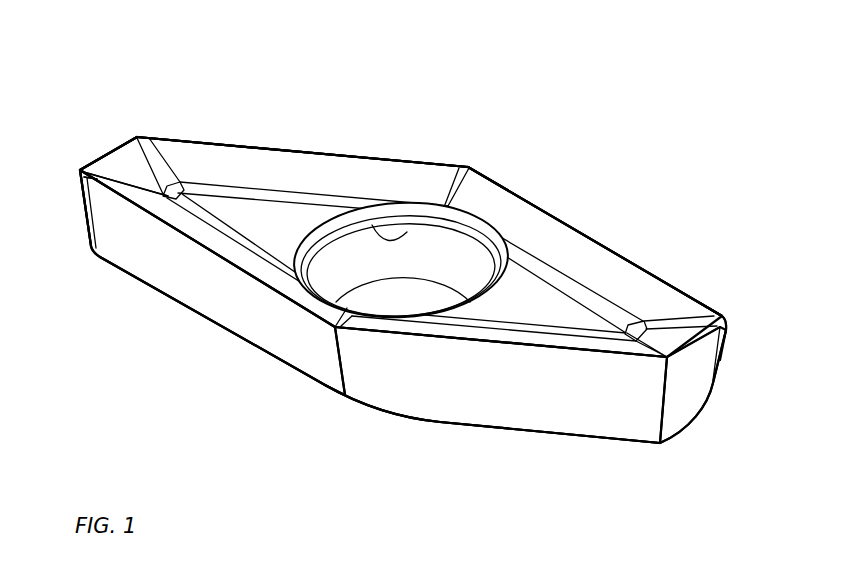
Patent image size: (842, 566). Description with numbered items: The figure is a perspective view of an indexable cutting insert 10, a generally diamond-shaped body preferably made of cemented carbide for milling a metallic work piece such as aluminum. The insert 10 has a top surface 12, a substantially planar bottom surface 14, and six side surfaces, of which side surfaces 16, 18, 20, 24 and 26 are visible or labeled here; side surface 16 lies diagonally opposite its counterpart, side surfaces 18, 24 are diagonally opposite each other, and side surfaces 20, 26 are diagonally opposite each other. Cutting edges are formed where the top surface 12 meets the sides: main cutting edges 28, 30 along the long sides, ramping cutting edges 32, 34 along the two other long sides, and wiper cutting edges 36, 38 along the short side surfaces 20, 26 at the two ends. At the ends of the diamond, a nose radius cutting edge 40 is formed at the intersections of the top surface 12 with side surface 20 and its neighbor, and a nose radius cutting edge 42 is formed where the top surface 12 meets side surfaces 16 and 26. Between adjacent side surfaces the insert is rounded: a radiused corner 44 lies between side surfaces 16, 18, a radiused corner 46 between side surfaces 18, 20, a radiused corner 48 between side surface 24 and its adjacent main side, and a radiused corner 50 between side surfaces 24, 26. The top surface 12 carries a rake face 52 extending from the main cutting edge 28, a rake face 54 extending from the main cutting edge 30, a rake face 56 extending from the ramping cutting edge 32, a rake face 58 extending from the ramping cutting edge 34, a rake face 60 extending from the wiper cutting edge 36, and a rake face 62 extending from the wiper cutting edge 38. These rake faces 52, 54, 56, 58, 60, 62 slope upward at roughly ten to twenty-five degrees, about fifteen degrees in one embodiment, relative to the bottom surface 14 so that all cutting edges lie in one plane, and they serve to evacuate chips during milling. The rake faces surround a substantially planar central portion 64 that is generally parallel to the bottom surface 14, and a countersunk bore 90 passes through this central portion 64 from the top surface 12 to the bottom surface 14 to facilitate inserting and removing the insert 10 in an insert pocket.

The indexable cutting insert 10 is at (660, 69).
The top surface 12 is at (280, 209).
The bottom surface 14 is at (290, 370).
The side surface 16 is at (189, 284).
The side surface 18 is at (489, 403).
The side surface 20 is at (694, 392).
The side surface 24 is at (333, 146).
The side surface 26 is at (98, 147).
The main cutting edge 28 is at (170, 233).
The main cutting edge 30 is at (592, 235).
The ramping cutting edge 32 is at (541, 348).
The ramping cutting edge 34 is at (383, 156).
The wiper cutting edge 36 is at (692, 346).
The wiper cutting edge 38 is at (112, 147).
The nose radius cutting edge 40 is at (727, 320).
The nose radius cutting edge 42 is at (80, 170).
The radiused corner 44 is at (333, 344).
The radiused corner 46 is at (658, 398).
The radiused corner 48 is at (449, 207).
The radiused corner 50 is at (139, 130).
The rake face 52 is at (253, 281).
The rake face 54 is at (535, 231).
The rake face 56 is at (458, 330).
The rake face 58 is at (200, 161).
The rake face 60 is at (668, 340).
The rake face 62 is at (127, 160).
The central portion 64 is at (548, 306).
The countersunk bore 90 is at (407, 232).